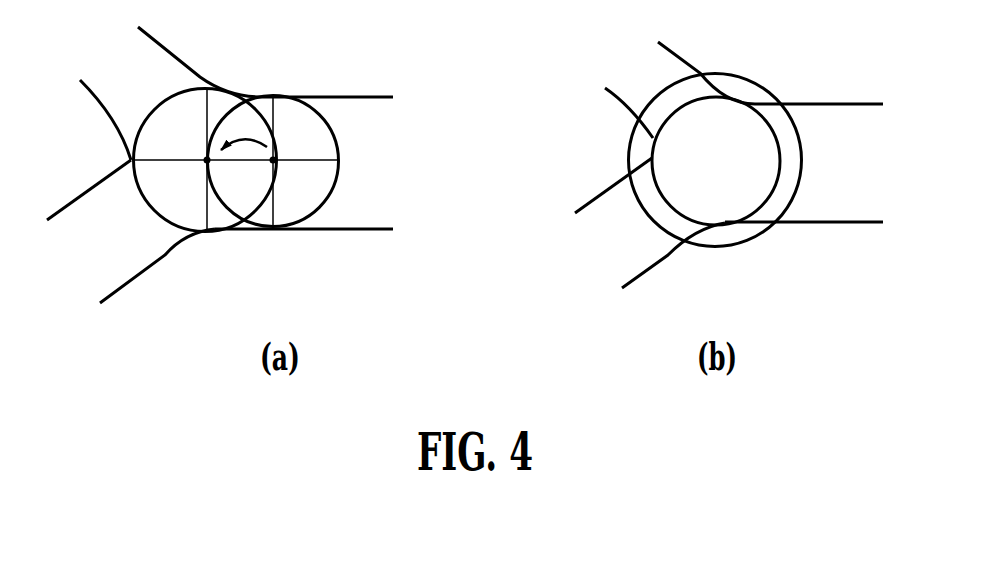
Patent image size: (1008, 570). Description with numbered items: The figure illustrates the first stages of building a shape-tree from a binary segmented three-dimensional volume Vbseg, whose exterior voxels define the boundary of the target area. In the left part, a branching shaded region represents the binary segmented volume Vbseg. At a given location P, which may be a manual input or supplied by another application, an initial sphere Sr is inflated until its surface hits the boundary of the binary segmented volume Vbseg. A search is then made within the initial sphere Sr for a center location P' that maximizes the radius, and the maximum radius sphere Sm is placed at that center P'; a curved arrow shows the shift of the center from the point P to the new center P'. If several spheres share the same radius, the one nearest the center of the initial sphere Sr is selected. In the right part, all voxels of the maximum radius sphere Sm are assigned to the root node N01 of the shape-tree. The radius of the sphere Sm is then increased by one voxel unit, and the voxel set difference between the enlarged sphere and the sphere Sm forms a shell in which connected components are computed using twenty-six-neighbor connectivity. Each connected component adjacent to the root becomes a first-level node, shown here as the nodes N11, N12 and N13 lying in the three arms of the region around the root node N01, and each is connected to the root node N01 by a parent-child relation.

The binary segmented 3D volume Vbseg is at (362, 119).
The initial sphere Sr is at (304, 163).
The maximum radius sphere Sm is at (768, 256).
The initial location P is at (273, 162).
The center location P' is at (236, 160).
The first-level node N11 is at (659, 97).
The first-level node N12 is at (646, 213).
The first-level node N13 is at (804, 157).
The root node N01 is at (716, 161).